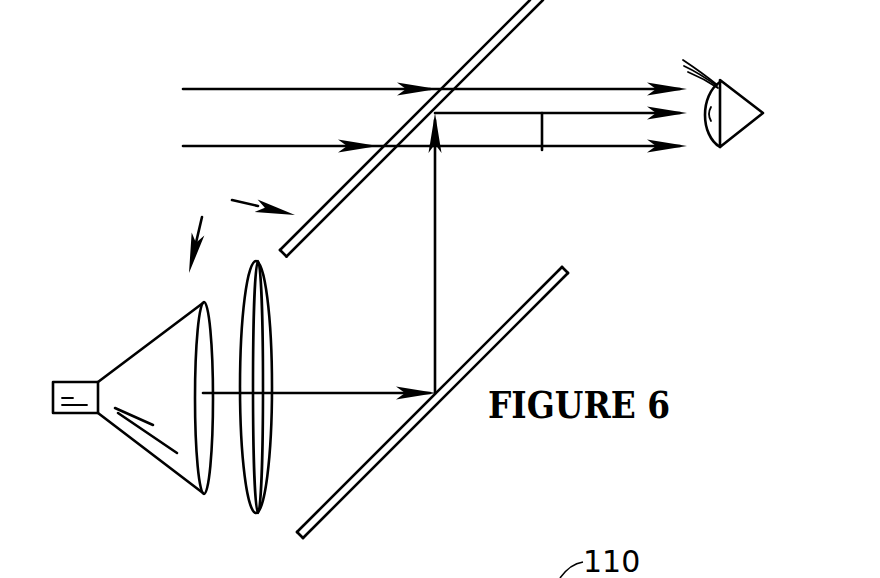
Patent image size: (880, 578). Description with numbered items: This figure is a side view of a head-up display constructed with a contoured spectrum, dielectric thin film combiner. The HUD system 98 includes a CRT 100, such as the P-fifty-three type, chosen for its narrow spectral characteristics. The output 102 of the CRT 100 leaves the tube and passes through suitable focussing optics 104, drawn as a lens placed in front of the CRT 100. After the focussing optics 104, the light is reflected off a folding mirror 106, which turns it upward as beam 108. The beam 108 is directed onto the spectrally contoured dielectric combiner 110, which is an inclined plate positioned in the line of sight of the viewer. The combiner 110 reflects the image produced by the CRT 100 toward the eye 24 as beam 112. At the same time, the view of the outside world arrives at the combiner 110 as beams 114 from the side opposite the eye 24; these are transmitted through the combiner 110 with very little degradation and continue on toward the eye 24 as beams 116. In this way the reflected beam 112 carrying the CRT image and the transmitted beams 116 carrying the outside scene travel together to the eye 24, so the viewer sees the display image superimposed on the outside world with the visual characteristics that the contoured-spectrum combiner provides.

The eye 24 is at (726, 148).
The HUD system 98 is at (240, 229).
The CRT 100 is at (120, 428).
The output 102 is at (358, 396).
The focussing optics 104 is at (258, 514).
The folding mirror 106 is at (513, 329).
The beam 108 is at (436, 247).
The spectrally contoured dielectric combiner 110 is at (543, 0).
The beam 112 is at (542, 150).
The beams 114 is at (275, 146).
The beams 116 is at (642, 143).